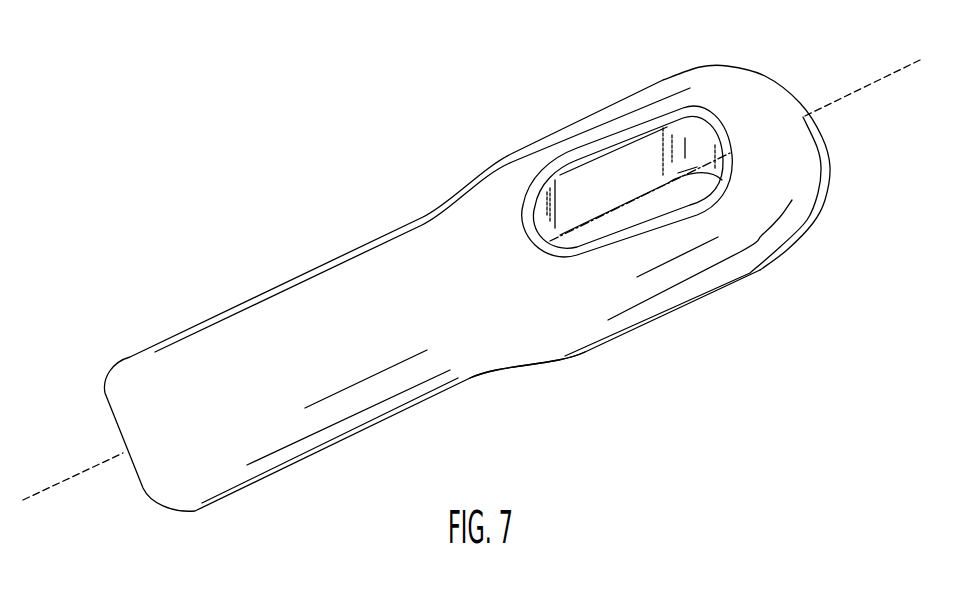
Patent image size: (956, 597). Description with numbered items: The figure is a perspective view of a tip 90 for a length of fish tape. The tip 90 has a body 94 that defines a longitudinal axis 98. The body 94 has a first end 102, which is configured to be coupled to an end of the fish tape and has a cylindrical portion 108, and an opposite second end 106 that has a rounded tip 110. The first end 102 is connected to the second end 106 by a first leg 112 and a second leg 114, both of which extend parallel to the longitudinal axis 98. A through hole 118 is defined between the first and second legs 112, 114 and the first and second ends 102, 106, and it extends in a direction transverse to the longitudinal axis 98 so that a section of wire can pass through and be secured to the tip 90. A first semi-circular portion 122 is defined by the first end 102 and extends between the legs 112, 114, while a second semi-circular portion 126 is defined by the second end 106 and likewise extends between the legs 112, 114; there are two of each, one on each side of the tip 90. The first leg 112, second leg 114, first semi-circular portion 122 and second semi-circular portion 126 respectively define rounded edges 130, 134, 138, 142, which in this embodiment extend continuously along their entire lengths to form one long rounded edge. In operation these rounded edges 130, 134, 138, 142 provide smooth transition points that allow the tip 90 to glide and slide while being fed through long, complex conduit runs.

The tip 90 is at (160, 155).
The body 94 is at (518, 348).
The longitudinal axis 98 is at (877, 80).
The first end 102 is at (188, 488).
The second end 106 is at (813, 155).
The cylindrical portion 108 is at (325, 437).
The rounded tip 110 is at (788, 92).
The first leg 112 is at (573, 127).
The second leg 114 is at (702, 302).
The through hole 118 is at (678, 198).
The first semi-circular portion 122 is at (540, 198).
The second semi-circular portion 126 is at (692, 172).
The rounded edge 130 is at (635, 133).
The rounded edge 134 is at (628, 233).
The rounded edge 138 is at (553, 240).
The rounded edge 142 is at (730, 168).